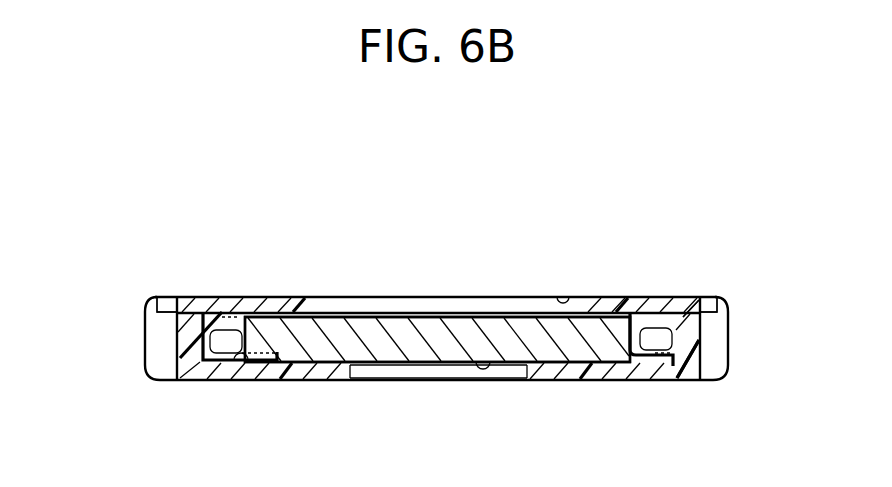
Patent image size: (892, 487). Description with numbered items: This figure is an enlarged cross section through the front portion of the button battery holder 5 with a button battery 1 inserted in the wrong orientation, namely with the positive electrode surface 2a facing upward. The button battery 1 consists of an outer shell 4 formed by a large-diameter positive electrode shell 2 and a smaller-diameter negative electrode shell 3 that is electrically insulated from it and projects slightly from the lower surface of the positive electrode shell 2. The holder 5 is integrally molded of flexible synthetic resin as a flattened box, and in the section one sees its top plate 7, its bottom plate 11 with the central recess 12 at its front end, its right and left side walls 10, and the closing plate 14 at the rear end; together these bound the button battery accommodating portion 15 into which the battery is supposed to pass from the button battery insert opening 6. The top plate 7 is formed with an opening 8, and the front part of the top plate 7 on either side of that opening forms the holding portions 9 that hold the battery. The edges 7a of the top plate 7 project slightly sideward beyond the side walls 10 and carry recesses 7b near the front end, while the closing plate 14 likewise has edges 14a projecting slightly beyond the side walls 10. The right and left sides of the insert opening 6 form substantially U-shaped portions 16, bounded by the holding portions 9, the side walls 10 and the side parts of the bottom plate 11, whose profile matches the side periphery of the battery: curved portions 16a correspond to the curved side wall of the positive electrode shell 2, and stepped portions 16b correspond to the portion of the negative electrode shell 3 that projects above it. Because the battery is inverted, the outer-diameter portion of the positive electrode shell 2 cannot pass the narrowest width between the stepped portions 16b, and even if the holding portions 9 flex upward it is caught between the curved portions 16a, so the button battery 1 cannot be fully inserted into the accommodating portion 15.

The button battery 1 is at (345, 297).
The positive electrode shell 2 is at (465, 315).
The positive electrode surface 2a is at (382, 297).
The negative electrode shell 3 is at (485, 362).
The outer shell 4 is at (450, 189).
The button battery holder 5 is at (680, 297).
The button battery insert opening 6 is at (237, 356).
The top plate 7 is at (420, 297).
The edge 7a is at (166, 297).
The recess 7b is at (152, 322).
The opening 8 is at (550, 297).
The holding portion 9 is at (283, 297).
The side wall 10 is at (150, 362).
The bottom plate 11 is at (298, 363).
The central recess 12 is at (356, 380).
The closing plate 14 is at (146, 300).
The edge 14a is at (148, 312).
The button battery accommodating portion 15 is at (580, 380).
The U-shaped portion 16 is at (203, 383).
The curved portion 16a is at (213, 313).
The stepped portion 16b is at (259, 297).